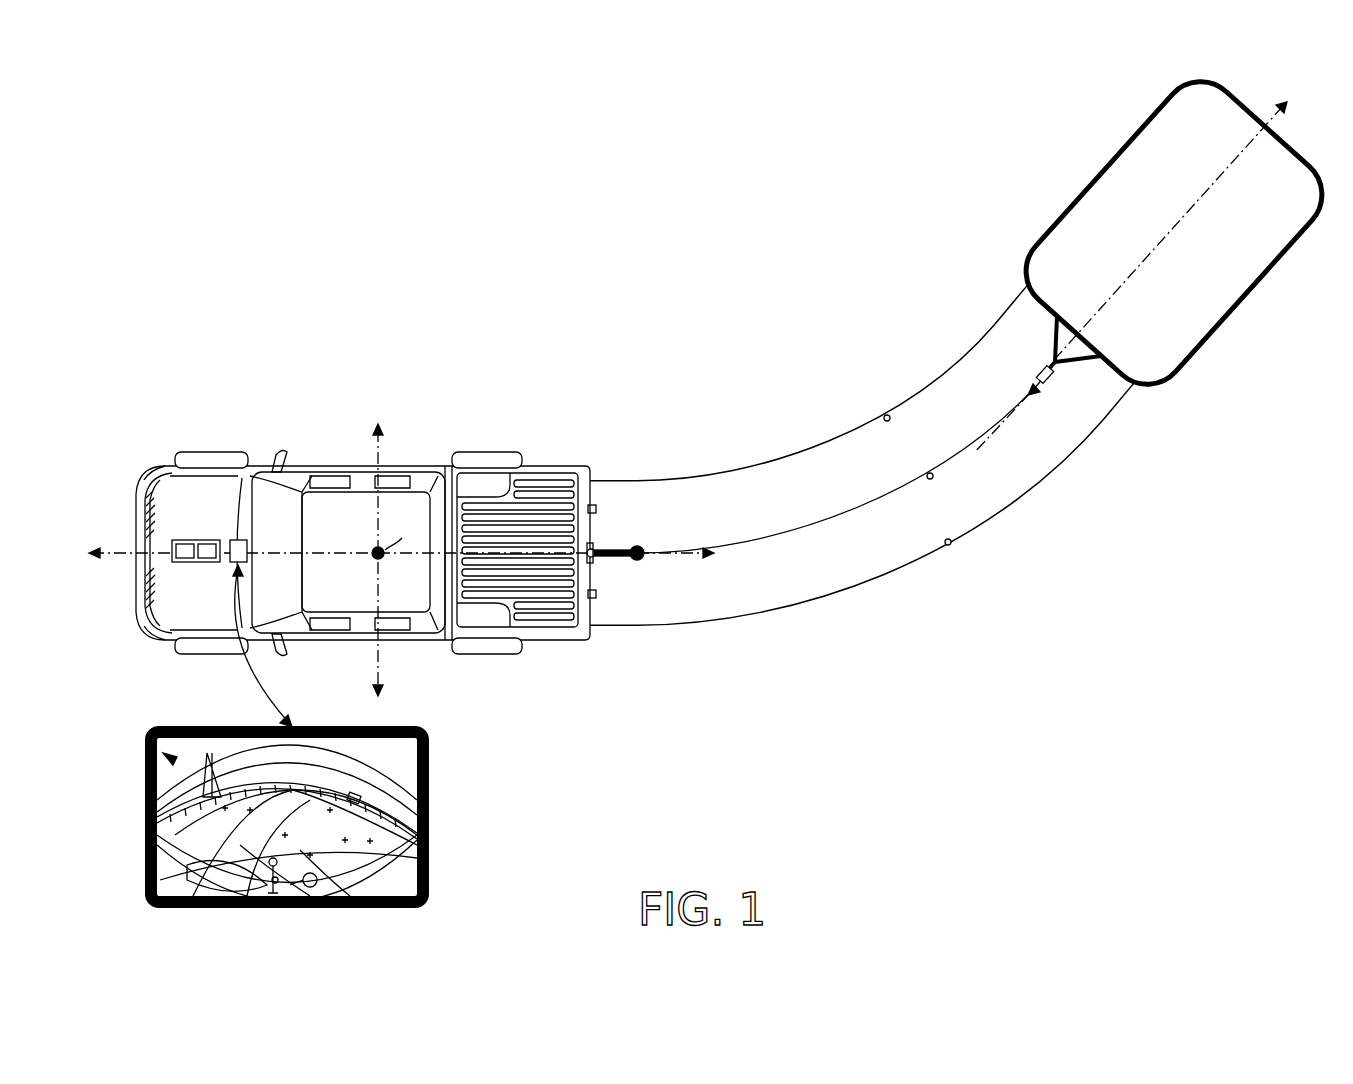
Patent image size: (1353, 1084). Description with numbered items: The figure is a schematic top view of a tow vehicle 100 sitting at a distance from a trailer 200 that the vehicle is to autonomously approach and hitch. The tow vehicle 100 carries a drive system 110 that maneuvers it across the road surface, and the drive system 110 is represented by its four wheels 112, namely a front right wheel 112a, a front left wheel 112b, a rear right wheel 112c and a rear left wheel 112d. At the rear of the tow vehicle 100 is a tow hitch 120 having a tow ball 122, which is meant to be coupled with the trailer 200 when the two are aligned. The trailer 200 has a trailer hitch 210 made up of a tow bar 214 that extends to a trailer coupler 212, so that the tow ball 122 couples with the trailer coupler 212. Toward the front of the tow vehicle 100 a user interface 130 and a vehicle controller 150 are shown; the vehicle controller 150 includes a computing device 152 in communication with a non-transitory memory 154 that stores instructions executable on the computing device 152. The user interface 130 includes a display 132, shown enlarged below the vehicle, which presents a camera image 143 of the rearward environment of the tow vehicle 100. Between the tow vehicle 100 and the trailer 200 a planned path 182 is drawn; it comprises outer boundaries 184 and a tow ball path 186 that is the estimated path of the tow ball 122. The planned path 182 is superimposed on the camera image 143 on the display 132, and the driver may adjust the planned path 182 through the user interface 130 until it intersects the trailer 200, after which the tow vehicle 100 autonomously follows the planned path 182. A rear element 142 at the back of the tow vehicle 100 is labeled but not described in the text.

The tow vehicle 100 is at (357, 537).
The drive system 110 is at (352, 549).
The wheel 112 is at (352, 549).
The front right wheel 112a is at (222, 451).
The front left wheel 112b is at (224, 653).
The rear right wheel 112c is at (502, 451).
The rear left wheel 112d is at (502, 653).
The tow hitch 120 is at (622, 557).
The tow ball 122 is at (641, 559).
The user interface 130 is at (250, 546).
The display 132 is at (286, 817).
The rear sensor 142 is at (597, 562).
The camera image 143 is at (168, 761).
The vehicle controller 150 is at (189, 560).
The computing device 152 is at (184, 560).
The non-transitory memory 154 is at (207, 562).
The planned path 182 is at (830, 452).
The outer boundaries 184 is at (885, 417).
The tow ball path 186 is at (928, 475).
The trailer 200 is at (1149, 242).
The trailer hitch 210 is at (994, 316).
The trailer coupler 212 is at (1038, 371).
The tow bar 214 is at (1057, 360).